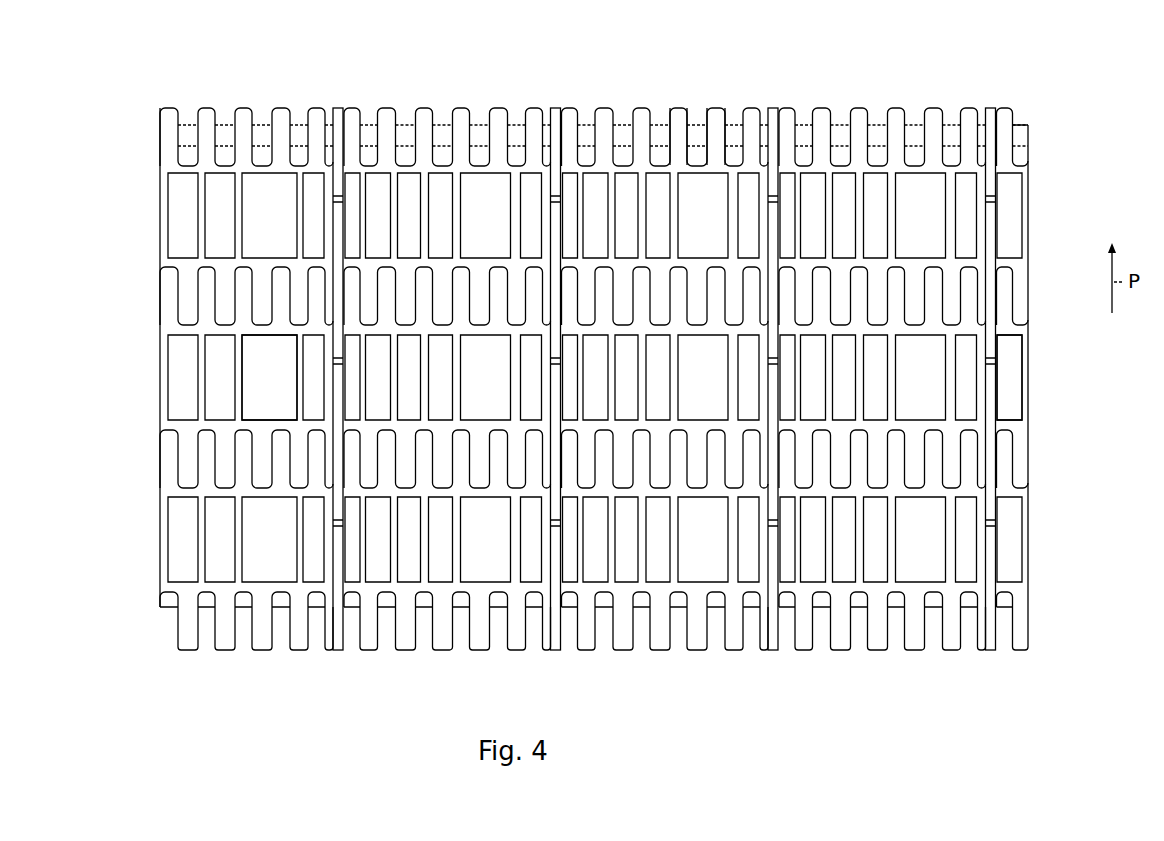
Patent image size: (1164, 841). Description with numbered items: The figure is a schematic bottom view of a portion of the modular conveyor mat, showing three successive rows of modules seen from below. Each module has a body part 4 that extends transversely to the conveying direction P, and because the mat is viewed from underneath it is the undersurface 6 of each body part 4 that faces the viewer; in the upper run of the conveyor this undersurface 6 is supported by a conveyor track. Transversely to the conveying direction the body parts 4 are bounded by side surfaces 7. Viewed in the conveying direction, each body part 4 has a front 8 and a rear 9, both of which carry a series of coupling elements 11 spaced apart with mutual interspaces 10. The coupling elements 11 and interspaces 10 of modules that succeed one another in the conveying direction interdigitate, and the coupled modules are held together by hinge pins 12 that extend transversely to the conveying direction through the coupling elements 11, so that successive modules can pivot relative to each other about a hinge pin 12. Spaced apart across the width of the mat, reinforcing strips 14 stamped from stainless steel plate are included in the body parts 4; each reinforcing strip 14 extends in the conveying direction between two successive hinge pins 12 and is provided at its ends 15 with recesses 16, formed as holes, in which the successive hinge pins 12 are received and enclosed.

The body part 4 is at (1008, 360).
The undersurface 6 is at (260, 350).
The side surface 7 is at (168, 402).
The front 8 is at (608, 100).
The rear 9 is at (669, 660).
The interspace 10 is at (697, 118).
The coupling element 11 is at (677, 120).
The hinge pin 12 is at (801, 133).
The reinforcing strip 14 is at (988, 210).
The end of reinforcing strip 15 is at (988, 127).
The recess 16 is at (763, 610).